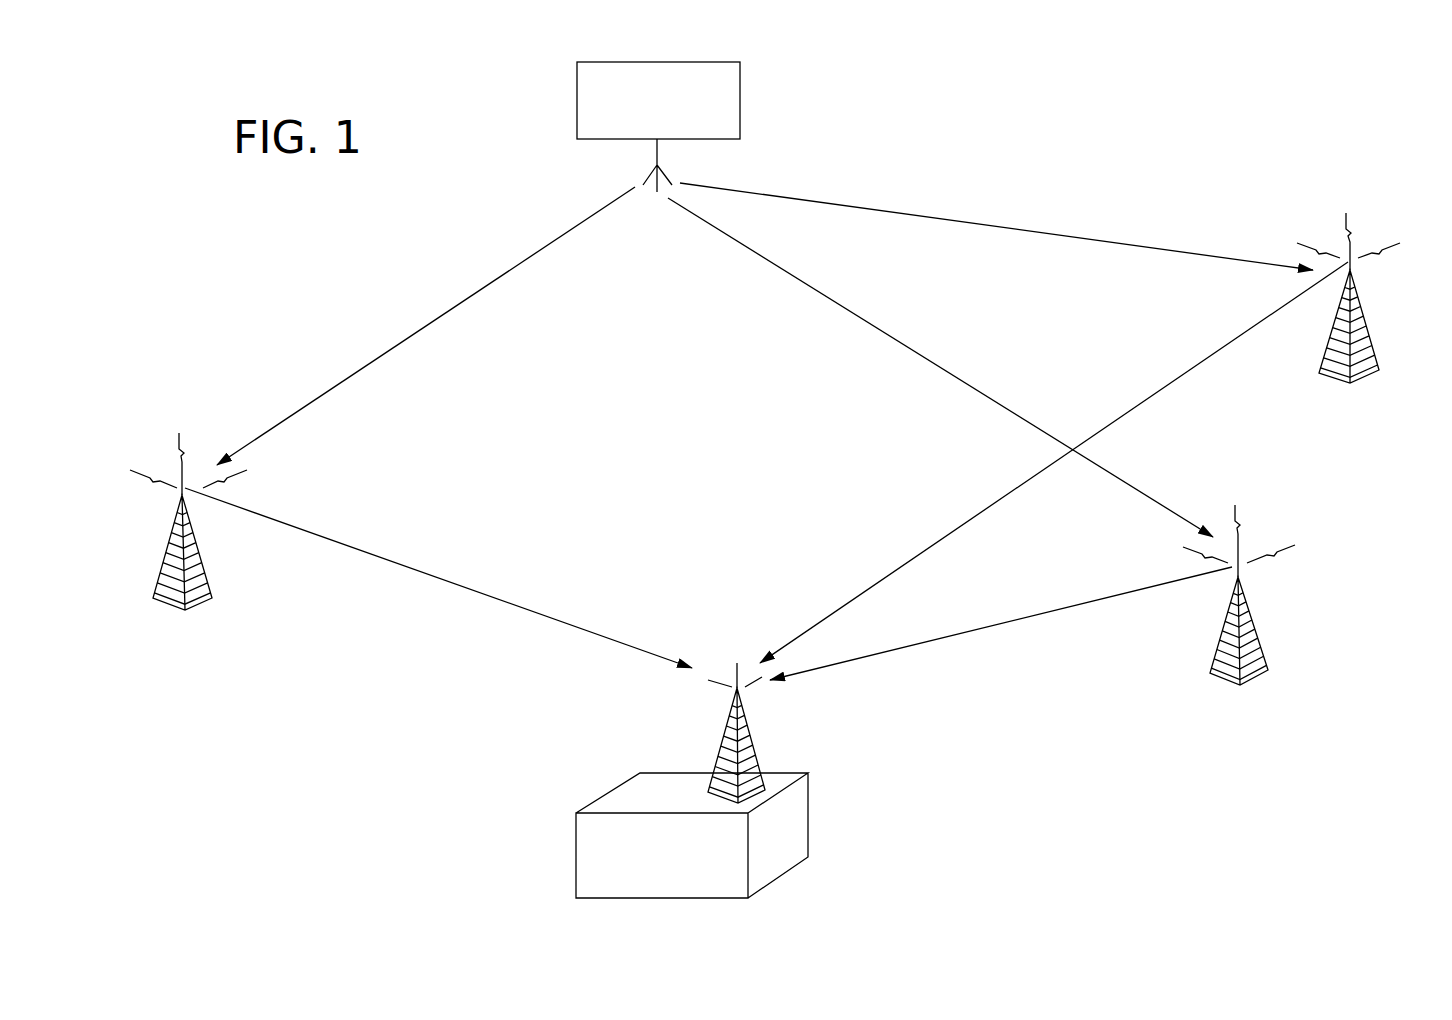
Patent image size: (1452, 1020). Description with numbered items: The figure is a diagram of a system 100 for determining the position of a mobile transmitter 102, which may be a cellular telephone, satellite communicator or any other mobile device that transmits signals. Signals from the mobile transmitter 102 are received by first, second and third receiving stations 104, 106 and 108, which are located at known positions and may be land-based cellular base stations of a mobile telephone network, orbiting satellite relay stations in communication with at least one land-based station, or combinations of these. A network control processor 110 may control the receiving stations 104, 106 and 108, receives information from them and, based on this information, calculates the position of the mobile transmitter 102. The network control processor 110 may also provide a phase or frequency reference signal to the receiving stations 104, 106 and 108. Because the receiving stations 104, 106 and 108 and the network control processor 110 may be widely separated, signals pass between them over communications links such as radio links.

The system 100 is at (1067, 180).
The mobile transmitter 102 is at (740, 72).
The first receiving station 104 is at (210, 598).
The second receiving station 106 is at (1252, 612).
The third receiving station 108 is at (1363, 315).
The network control processor 110 is at (792, 828).